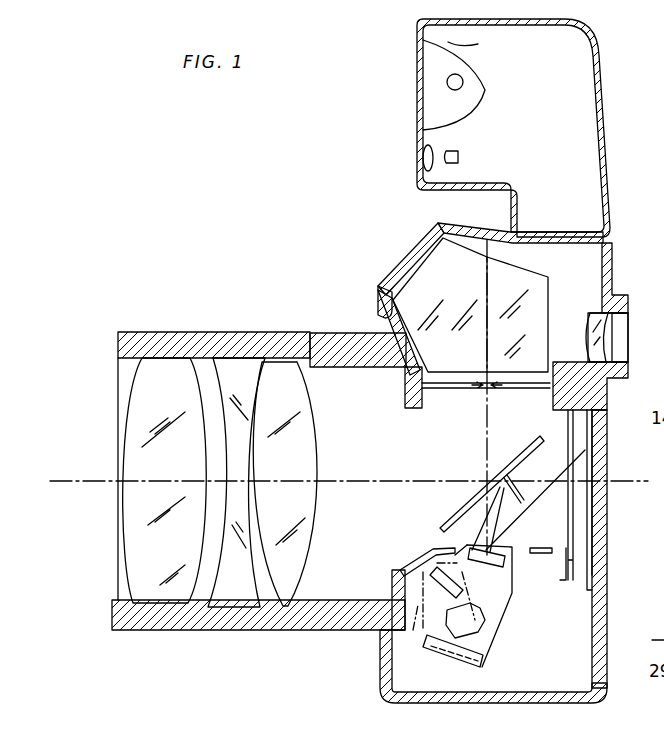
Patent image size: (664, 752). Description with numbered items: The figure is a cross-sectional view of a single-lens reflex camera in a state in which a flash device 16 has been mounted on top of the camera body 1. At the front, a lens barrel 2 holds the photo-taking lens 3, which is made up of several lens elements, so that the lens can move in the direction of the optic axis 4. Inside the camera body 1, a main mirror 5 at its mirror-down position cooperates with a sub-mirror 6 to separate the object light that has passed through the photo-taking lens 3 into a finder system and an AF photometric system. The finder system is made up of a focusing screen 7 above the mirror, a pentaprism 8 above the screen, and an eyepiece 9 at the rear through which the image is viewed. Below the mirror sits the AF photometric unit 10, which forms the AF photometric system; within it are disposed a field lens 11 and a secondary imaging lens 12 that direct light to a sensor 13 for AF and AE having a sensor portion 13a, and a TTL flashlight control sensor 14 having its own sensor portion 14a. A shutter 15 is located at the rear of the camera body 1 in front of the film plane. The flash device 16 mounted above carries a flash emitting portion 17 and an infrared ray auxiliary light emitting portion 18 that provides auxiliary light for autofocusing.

The camera body 1 is at (590, 588).
The lens barrel 2 is at (252, 630).
The photo-taking lens 3 is at (288, 365).
The optic axis 4 is at (69, 478).
The main mirror 5 is at (442, 520).
The sub-mirror 6 is at (524, 478).
The focusing screen 7 is at (457, 392).
The pentaprism 8 is at (540, 280).
The eyepiece 9 is at (612, 328).
The AF photometric unit 10 is at (512, 598).
The field lens 11 is at (476, 548).
The secondary imaging lens 12 is at (488, 625).
The sensor for AF and AE 13 is at (466, 658).
The sensor portion 13a is at (442, 645).
The TTL flashlight control sensor 14 is at (440, 598).
The sensor portion 14a is at (422, 565).
The shutter 15 is at (572, 458).
The flash device 16 is at (590, 100).
The flash emitting portion 17 is at (460, 80).
The infrared ray auxiliary light emitting portion 18 is at (410, 182).